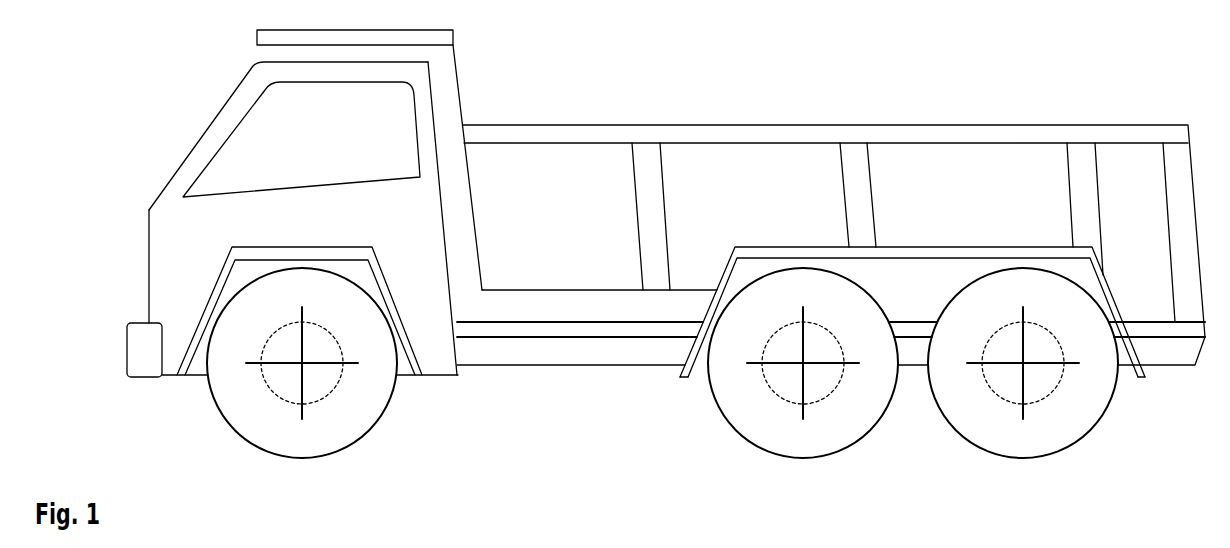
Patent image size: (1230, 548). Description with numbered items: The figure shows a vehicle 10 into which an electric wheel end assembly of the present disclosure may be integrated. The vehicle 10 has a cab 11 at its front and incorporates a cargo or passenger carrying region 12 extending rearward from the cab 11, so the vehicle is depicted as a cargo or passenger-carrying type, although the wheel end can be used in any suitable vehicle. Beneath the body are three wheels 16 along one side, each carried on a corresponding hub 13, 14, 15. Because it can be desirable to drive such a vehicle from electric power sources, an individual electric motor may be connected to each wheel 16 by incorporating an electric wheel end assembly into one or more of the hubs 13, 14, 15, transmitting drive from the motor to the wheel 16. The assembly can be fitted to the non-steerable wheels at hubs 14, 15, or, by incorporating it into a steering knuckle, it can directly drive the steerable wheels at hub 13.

The vehicle 10 is at (661, 230).
The cab 11 is at (182, 232).
The cargo or passenger carrying region 12 is at (752, 191).
The hub 13 is at (303, 363).
The hub 14 is at (804, 363).
The hub 15 is at (1024, 363).
The wheel 16 is at (262, 423).